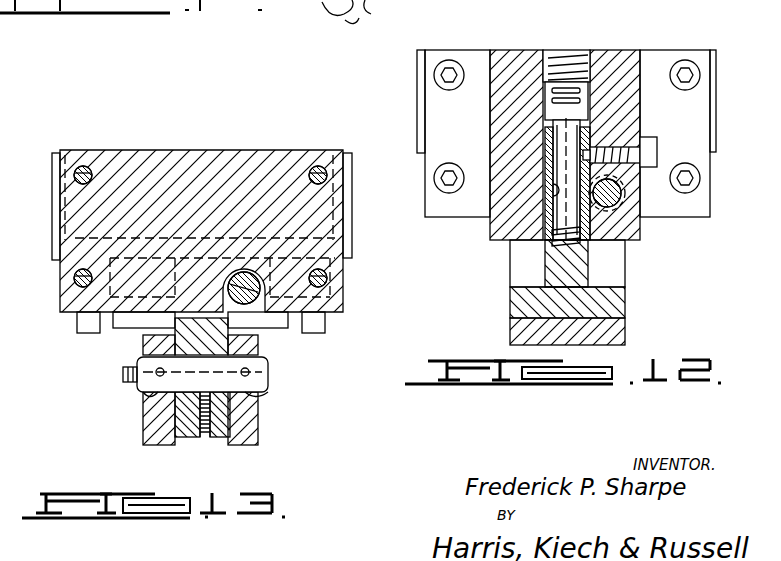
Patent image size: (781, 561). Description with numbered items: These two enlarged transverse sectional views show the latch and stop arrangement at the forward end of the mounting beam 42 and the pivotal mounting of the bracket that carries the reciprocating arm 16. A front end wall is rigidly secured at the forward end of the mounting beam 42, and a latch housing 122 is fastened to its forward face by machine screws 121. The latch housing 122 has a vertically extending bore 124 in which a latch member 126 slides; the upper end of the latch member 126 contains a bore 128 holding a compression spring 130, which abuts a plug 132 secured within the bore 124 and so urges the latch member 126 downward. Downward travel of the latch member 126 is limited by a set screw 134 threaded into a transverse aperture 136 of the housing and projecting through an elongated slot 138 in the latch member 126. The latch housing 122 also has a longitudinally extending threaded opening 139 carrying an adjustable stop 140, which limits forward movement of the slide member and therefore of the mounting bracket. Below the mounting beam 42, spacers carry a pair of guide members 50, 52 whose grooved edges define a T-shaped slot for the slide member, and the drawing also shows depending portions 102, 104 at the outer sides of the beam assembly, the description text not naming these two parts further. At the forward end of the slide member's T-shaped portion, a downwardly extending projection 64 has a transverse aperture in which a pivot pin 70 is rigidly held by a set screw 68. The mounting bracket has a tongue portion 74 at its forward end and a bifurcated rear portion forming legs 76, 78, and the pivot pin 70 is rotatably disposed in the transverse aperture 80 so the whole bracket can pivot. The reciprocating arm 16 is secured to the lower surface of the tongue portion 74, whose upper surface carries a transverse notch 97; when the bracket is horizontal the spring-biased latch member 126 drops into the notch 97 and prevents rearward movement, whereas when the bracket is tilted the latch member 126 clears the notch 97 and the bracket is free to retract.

In FIG. 12, the reciprocating arm 16 is at (618, 335).
In FIG. 13, the mounting beam 42 is at (385, 186).
In FIG. 12, the mounting beam 42 is at (716, 72).
In FIG. 13, the guide member 50 is at (127, 320).
In FIG. 13, the guide member 52 is at (290, 325).
In FIG. 13, the downwardly extending projection 64 is at (222, 432).
In FIG. 13, the set screw 68 is at (192, 437).
In FIG. 13, the pivot pin 70 is at (262, 372).
In FIG. 12, the tongue portion 74 is at (605, 308).
In FIG. 13, the leg 76 is at (155, 415).
In FIG. 13, the leg 78 is at (250, 420).
In FIG. 13, the transverse aperture 80 is at (250, 392).
In FIG. 12, the transverse notch 97 is at (615, 285).
In FIG. 13, the left leg 102 is at (75, 323).
In FIG. 13, the right leg 104 is at (318, 323).
In FIG. 12, the machine screws 121 is at (684, 65).
In FIG. 13, the latch housing 122 is at (143, 162).
In FIG. 12, the latch housing 122 is at (605, 58).
In FIG. 12, the vertically extending bore 124 is at (580, 108).
In FIG. 12, the latch member 126 is at (560, 258).
In FIG. 12, the bore 128 is at (556, 190).
In FIG. 12, the compression spring 130 is at (560, 105).
In FIG. 12, the plug 132 is at (553, 62).
In FIG. 12, the set screw 134 is at (583, 135).
In FIG. 12, the transverse aperture 136 is at (646, 150).
In FIG. 12, the elongated slot 138 is at (578, 168).
In FIG. 12, the threaded opening 139 is at (622, 200).
In FIG. 13, the adjustable stop 140 is at (226, 290).
In FIG. 12, the adjustable stop 140 is at (622, 205).